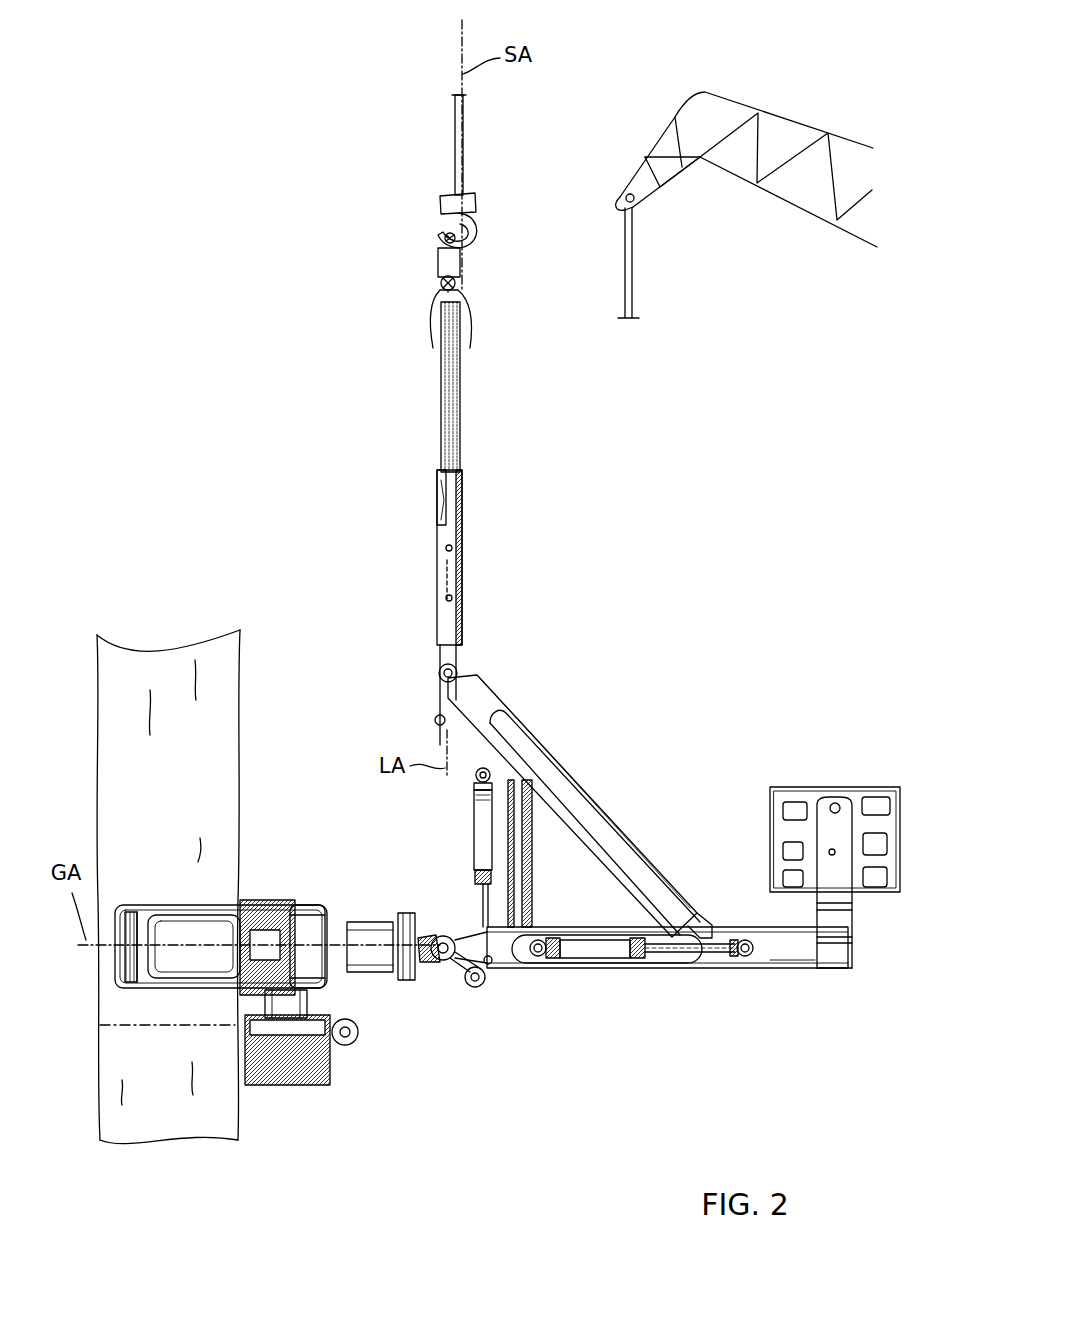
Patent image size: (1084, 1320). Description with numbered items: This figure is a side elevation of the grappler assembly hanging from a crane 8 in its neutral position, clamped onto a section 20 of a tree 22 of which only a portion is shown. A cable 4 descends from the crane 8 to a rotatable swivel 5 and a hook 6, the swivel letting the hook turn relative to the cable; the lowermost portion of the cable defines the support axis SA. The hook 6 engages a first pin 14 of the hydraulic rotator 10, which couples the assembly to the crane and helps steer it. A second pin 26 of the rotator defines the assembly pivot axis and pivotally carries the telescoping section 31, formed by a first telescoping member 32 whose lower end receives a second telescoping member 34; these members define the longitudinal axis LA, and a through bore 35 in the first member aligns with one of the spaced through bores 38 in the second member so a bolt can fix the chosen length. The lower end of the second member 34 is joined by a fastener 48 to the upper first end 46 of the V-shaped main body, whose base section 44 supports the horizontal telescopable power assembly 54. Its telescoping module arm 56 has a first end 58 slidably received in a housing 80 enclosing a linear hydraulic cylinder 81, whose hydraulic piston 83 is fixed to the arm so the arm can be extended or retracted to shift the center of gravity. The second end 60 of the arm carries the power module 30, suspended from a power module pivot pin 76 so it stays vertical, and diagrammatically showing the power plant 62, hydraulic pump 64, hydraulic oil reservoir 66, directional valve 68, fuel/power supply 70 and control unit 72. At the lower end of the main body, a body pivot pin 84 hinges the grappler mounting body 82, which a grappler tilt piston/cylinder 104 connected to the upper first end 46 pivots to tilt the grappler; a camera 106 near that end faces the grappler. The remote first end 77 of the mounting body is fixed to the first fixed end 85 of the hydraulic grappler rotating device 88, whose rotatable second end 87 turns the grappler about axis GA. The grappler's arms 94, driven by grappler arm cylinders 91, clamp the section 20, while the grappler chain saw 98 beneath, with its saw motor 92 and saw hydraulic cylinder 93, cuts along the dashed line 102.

The cable 4 is at (455, 128).
The rotatable swivel 5 is at (465, 202).
The hook 6 is at (474, 215).
The crane 8 is at (785, 118).
The hydraulic rotator 10 is at (376, 265).
The first pin 14 is at (445, 236).
The section of a tree 20 is at (220, 786).
The tree 22 is at (93, 518).
The second pin 26 is at (456, 282).
The power module 30 is at (830, 790).
The telescoping section 31 is at (540, 484).
The first telescoping member 32 is at (461, 400).
The second telescoping member 34 is at (463, 558).
The through bore 35 is at (441, 490).
The through bores 38 is at (446, 548).
The base section 44 is at (700, 908).
The upper first end 46 is at (505, 718).
The fastener 48 is at (440, 671).
The horizontal telescopable power assembly 54 is at (773, 1032).
The telescoping module arm 56 is at (780, 969).
The first end 58 is at (672, 962).
The second end 60 is at (845, 969).
The power plant 62 is at (875, 805).
The hydraulic pump 64 is at (880, 845).
The hydraulic oil reservoir 66 is at (875, 885).
The directional valve 68 is at (790, 885).
The fuel/power supply 70 is at (788, 852).
The control unit 72 is at (787, 808).
The power module pivot pin 76 is at (831, 805).
The remote first end 77 is at (422, 922).
The housing 80 is at (592, 966).
The linear hydraulic cylinder 81 is at (621, 958).
The grappler mounting body 82 is at (450, 960).
The hydraulic piston 83 is at (688, 962).
The body pivot pin 84 is at (476, 990).
The first fixed end 85 is at (404, 983).
The second end 87 is at (340, 917).
The hydraulic grappler rotating device 88 is at (380, 920).
The grappler arm cylinders 91 is at (283, 905).
The saw motor 92 is at (330, 1050).
The saw hydraulic cylinder 93 is at (285, 1087).
The grappler arms 94 is at (180, 908).
The grappler chain saw 98 is at (308, 1012).
The dashed line 102 is at (122, 1033).
The grappler tilt piston/cylinder 104 is at (480, 826).
The camera 106 is at (435, 718).